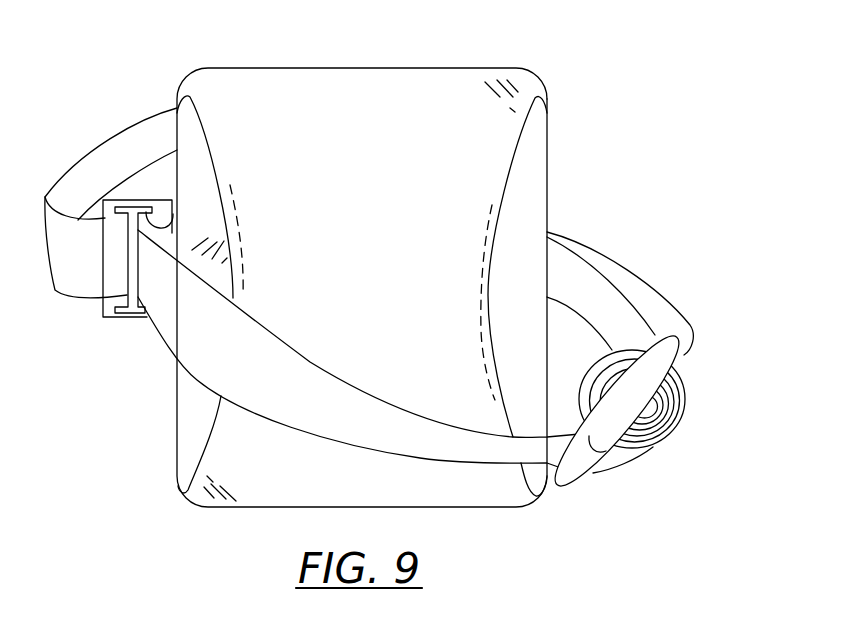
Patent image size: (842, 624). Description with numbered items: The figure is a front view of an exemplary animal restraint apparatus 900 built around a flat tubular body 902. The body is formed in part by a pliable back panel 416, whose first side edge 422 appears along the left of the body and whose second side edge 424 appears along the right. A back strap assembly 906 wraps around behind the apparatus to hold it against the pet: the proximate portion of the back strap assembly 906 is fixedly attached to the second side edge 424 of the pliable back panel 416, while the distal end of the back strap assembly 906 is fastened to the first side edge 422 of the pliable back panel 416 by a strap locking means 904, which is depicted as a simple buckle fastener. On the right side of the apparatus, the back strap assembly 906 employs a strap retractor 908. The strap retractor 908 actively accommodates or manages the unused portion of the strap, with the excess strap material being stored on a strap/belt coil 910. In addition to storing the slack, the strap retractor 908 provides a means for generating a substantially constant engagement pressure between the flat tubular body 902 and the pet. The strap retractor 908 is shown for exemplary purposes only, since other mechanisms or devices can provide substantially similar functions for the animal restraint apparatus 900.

The animal restraint apparatus 900 is at (142, 61).
The flat tubular body 902 is at (382, 268).
The strap locking means 904 is at (116, 317).
The back strap assembly 906 is at (265, 376).
The strap retractor 908 is at (603, 447).
The strap/belt coil 910 is at (676, 419).
The pliable back panel 416 is at (527, 152).
The first side edge 422 is at (177, 438).
The second side edge 424 is at (548, 182).